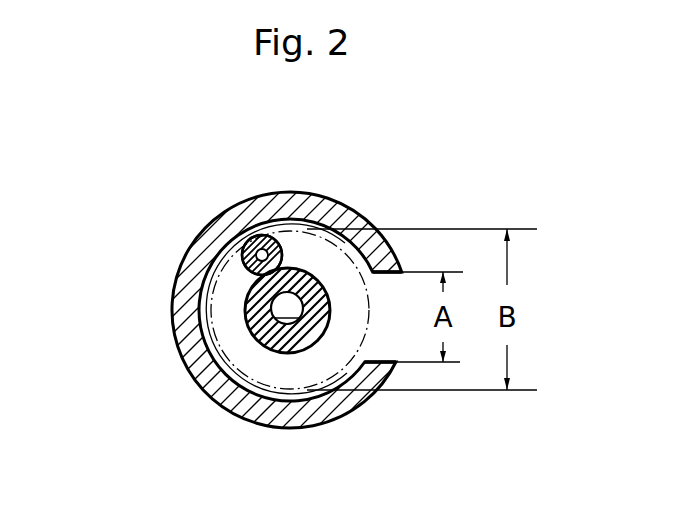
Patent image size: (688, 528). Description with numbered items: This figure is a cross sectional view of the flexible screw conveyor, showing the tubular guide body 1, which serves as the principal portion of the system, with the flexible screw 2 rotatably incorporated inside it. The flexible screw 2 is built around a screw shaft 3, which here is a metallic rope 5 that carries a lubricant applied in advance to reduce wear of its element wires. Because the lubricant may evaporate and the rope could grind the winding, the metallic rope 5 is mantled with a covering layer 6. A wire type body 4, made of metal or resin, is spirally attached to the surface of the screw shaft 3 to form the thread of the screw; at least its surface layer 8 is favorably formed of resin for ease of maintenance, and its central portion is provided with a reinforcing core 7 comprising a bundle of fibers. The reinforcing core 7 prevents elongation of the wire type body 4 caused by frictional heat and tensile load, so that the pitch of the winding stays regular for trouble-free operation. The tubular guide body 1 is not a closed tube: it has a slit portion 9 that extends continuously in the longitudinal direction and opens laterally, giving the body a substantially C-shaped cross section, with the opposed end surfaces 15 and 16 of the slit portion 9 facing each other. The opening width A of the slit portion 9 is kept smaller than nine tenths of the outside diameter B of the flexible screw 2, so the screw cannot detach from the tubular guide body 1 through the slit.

The tubular guide body 1 is at (195, 229).
The flexible screw 2 is at (226, 312).
The screw shaft 3 is at (246, 341).
The wire type body 4 is at (236, 262).
The metallic rope 5 is at (286, 354).
The covering layer 6 is at (268, 352).
The reinforcing core 7 is at (253, 239).
The surface layer 8 is at (277, 237).
The slit portion 9 is at (410, 299).
The end surface 15 is at (383, 270).
The end surface 16 is at (378, 360).